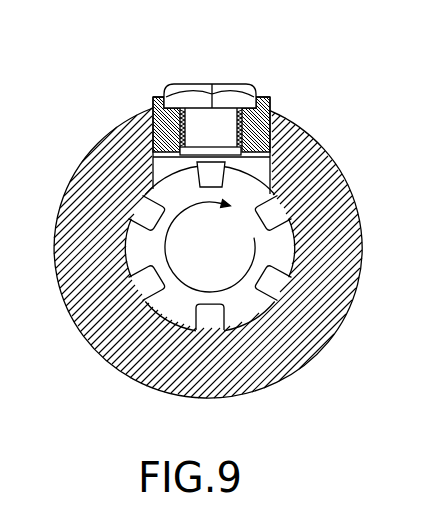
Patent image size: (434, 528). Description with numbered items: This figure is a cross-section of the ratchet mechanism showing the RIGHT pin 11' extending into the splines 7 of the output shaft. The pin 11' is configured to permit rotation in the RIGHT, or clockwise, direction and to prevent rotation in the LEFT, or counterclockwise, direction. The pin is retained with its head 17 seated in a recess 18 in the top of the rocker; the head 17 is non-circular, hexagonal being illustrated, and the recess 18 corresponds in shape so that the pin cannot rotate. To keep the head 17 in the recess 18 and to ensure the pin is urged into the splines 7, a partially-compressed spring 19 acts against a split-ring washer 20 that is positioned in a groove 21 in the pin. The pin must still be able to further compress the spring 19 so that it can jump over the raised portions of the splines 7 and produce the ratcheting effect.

The RIGHT pin 11' is at (201, 253).
The head 17 is at (236, 95).
The recess 18 is at (165, 104).
The spring 19 is at (273, 112).
The split-ring washer 20 is at (242, 150).
The groove 21 is at (206, 148).
The splines 7 is at (228, 166).